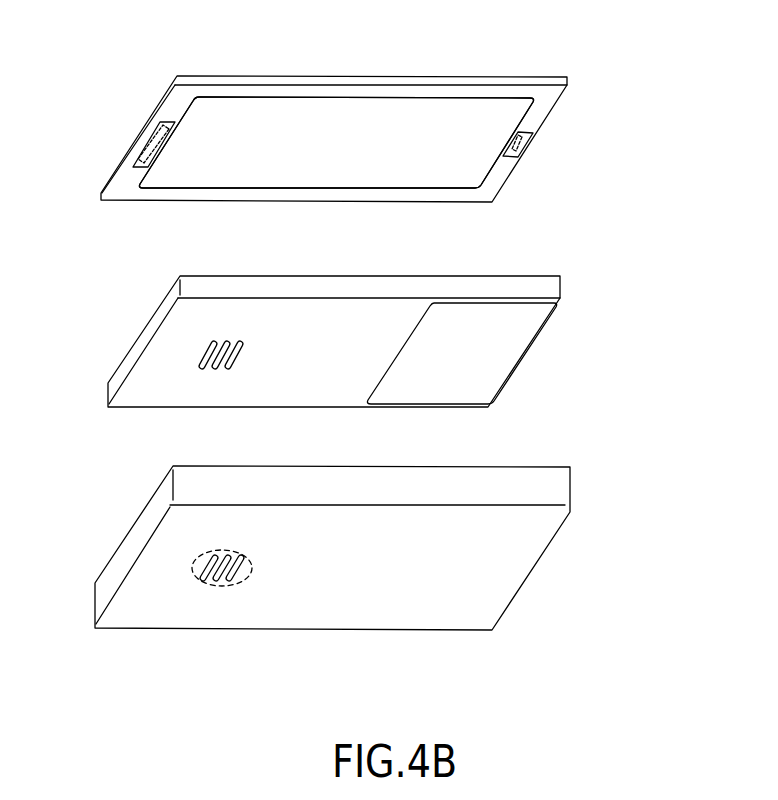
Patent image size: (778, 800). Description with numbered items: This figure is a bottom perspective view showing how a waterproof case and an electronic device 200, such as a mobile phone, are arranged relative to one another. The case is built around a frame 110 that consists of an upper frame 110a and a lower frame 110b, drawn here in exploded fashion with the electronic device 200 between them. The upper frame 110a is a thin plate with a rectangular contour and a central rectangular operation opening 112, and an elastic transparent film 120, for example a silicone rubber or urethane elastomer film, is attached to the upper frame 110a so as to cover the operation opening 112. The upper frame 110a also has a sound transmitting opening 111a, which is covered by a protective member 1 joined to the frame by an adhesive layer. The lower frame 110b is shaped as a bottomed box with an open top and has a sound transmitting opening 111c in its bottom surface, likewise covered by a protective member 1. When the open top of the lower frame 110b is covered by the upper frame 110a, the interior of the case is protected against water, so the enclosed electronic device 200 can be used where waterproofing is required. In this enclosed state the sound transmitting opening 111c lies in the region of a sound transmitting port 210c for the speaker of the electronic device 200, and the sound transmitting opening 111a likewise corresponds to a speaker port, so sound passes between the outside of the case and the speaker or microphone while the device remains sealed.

The protective member 1 is at (140, 160).
The frame 110 is at (676, 88).
The upper frame 110a is at (535, 117).
The lower frame 110b is at (510, 558).
The sound transmitting opening 111a is at (143, 135).
The sound transmitting opening 111c is at (238, 572).
The operation opening 112 is at (375, 98).
The elastic transparent film 120 is at (262, 127).
The electronic device 200 is at (503, 357).
The sound transmitting port 210c is at (200, 357).